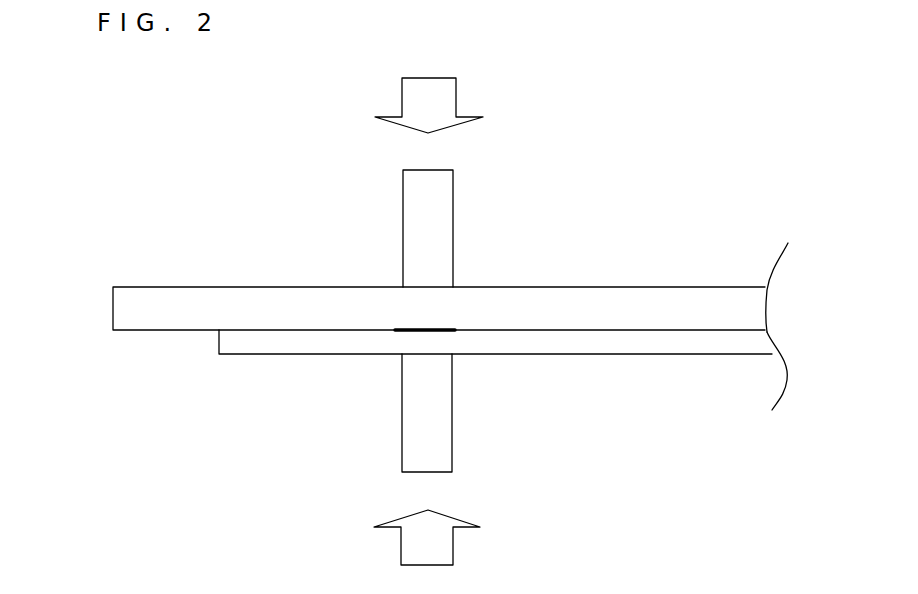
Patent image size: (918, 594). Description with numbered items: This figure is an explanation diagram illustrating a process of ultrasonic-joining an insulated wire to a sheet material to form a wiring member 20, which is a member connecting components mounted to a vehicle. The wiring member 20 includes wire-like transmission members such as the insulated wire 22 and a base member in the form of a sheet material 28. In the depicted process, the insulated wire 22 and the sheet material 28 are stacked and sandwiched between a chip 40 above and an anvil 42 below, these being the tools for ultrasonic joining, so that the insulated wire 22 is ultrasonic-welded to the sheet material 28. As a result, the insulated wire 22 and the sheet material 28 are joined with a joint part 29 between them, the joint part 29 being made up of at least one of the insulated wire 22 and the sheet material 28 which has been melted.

The wiring member 20 is at (450, 306).
The insulated wire 22 is at (713, 288).
The sheet material 28 is at (652, 355).
The joint part 29 is at (452, 330).
The chip 40 is at (453, 212).
The anvil 42 is at (452, 418).